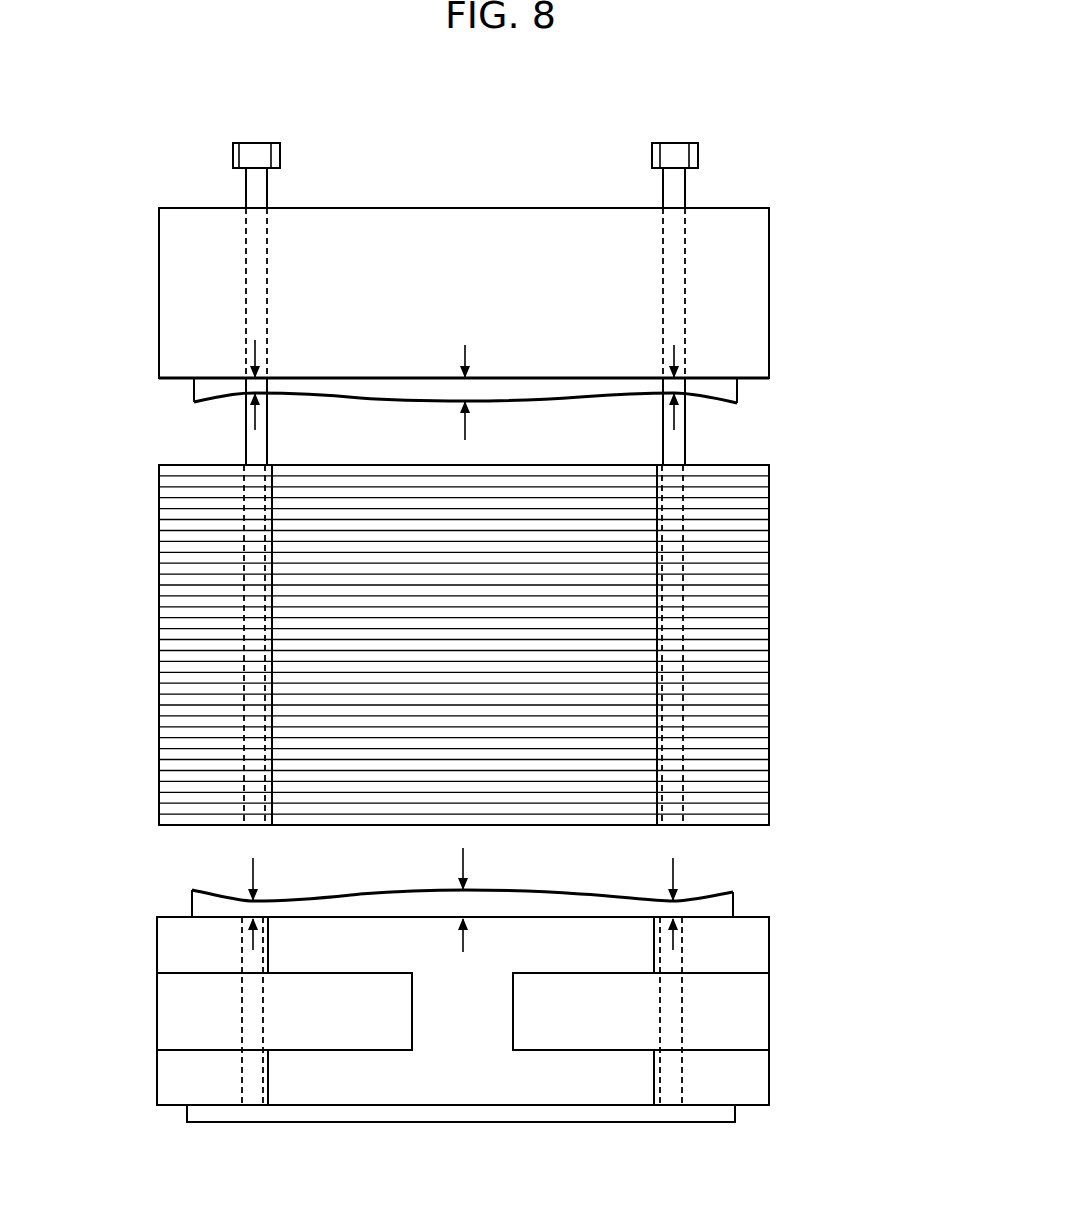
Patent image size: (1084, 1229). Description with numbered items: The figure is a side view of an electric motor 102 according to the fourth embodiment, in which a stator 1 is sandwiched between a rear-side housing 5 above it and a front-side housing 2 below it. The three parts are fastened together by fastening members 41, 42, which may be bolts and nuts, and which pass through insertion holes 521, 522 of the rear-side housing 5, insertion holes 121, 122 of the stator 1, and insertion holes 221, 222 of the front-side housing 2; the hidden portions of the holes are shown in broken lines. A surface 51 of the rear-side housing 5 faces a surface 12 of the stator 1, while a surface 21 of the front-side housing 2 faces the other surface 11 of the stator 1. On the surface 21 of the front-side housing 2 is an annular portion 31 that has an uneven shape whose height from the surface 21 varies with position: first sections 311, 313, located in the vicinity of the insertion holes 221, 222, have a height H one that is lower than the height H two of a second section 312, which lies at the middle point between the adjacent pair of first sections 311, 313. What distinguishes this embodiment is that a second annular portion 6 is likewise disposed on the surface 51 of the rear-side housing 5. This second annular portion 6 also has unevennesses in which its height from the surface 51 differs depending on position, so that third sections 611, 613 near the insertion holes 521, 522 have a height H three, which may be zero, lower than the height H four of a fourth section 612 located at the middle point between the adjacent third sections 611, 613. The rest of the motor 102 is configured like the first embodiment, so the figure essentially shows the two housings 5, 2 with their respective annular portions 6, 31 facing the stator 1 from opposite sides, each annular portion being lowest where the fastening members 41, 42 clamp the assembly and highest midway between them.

The electric motor 102 is at (826, 136).
The fastening member 41 is at (281, 152).
The fastening member 42 is at (700, 152).
The rear-side housing 5 is at (770, 228).
The surface of the rear-side housing 51 is at (160, 378).
The insertion hole 521 is at (245, 268).
The insertion hole 522 is at (687, 272).
The second annular portion 6 is at (738, 392).
The third section 611 is at (268, 387).
The fourth section 612 is at (465, 393).
The third section 613 is at (680, 387).
The stator 1 is at (769, 520).
The surface of the stator 12 is at (164, 465).
The surface of the stator 11 is at (168, 826).
The insertion hole 121 is at (243, 505).
The insertion hole 122 is at (683, 690).
The annular portion 31 is at (736, 898).
The first section 311 is at (256, 906).
The second section 312 is at (466, 905).
The first section 313 is at (677, 906).
The front-side housing 2 is at (769, 1018).
The surface of the front-side housing 21 is at (167, 917).
The insertion hole 221 is at (242, 948).
The insertion hole 222 is at (685, 953).